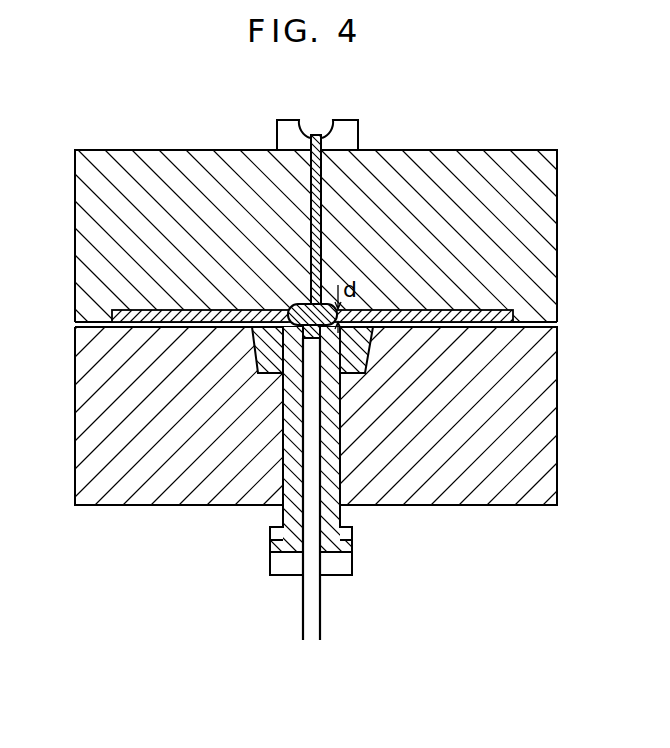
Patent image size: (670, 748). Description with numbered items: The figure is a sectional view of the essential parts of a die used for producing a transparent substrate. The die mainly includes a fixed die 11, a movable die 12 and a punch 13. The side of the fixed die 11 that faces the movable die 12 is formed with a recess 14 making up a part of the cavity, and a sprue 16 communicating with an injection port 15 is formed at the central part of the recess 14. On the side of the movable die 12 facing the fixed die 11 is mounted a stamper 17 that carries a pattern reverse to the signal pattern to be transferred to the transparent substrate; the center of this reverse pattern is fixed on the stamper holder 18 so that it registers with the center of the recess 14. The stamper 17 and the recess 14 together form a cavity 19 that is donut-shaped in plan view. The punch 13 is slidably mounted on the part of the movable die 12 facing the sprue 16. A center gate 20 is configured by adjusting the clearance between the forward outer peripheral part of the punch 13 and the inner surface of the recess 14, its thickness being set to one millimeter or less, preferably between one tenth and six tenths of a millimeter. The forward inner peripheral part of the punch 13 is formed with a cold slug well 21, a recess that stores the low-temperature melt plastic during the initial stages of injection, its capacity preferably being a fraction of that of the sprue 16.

The fixed die 11 is at (114, 165).
The movable die 12 is at (110, 495).
The punch 13 is at (336, 410).
The recess 14 is at (497, 307).
The injection port 15 is at (322, 134).
The sprue 16 is at (320, 220).
The stamper 17 is at (510, 323).
The stamper holder 18 is at (252, 372).
The cavity 19 is at (140, 310).
The center gate 20 is at (290, 306).
The cold slug well 21 is at (293, 385).